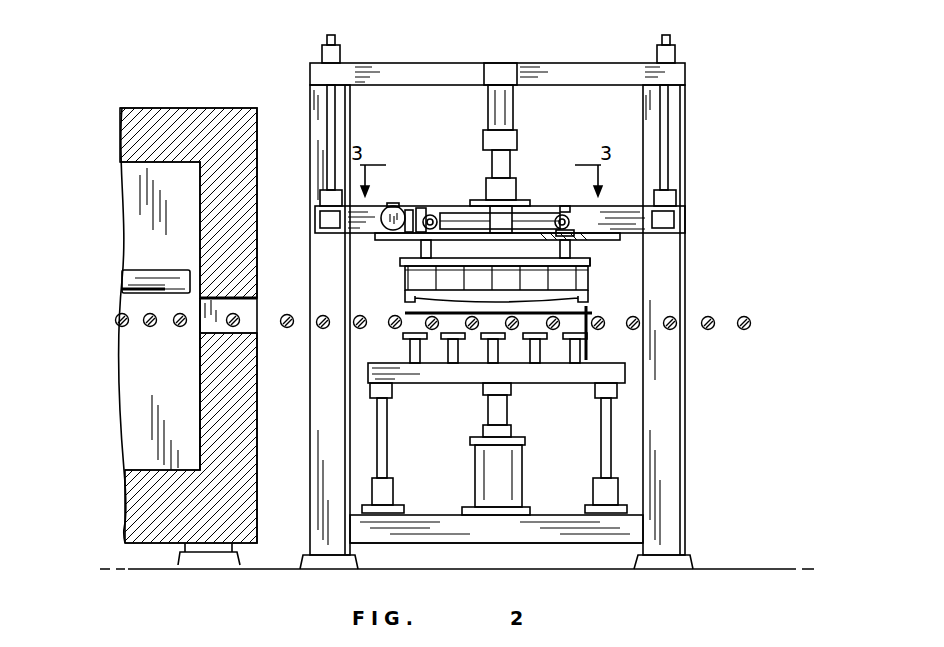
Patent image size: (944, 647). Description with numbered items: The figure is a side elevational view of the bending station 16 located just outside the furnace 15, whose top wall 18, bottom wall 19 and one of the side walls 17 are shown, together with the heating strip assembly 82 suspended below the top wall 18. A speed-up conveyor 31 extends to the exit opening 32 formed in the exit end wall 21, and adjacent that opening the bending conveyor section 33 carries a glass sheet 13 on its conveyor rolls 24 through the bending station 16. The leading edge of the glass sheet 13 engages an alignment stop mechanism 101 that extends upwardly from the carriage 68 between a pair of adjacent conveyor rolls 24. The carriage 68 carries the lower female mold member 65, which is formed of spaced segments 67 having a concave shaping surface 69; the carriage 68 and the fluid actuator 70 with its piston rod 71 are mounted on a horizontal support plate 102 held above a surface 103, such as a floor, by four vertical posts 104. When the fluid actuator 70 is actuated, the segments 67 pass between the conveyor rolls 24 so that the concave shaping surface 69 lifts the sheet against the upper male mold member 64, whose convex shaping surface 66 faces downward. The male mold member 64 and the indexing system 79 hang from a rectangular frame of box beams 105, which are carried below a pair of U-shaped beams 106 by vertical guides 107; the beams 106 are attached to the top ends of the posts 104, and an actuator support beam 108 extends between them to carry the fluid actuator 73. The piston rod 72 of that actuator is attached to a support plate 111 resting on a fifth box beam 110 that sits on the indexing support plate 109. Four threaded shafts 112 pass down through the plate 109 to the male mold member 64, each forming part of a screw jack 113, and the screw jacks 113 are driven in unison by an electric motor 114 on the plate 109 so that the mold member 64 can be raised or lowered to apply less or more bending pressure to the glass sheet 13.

The glass sheet 13 is at (490, 305).
The furnace 15 is at (178, 105).
The bending station 16 is at (712, 36).
The side walls 17 is at (130, 186).
The top wall 18 is at (137, 108).
The bottom wall 19 is at (132, 505).
The exit end wall 21 is at (250, 415).
The conveyor rolls 24 is at (147, 322).
The speed-up conveyor 31 is at (178, 338).
The exit opening 32 is at (246, 300).
The bending conveyor section 33 is at (700, 300).
The upper male mold member 64 is at (595, 264).
The lower female mold member 65 is at (424, 388).
The convex shaping surface 66 is at (410, 298).
The segments 67 is at (576, 375).
The carriage 68 is at (372, 366).
The concave shaping surface 69 is at (468, 378).
The fluid actuator 70 is at (515, 465).
The piston rod 71 is at (497, 428).
The piston rod 72 is at (505, 160).
The fluid actuator 73 is at (512, 112).
The indexing system 79 is at (424, 200).
The heating strip assembly 82 is at (126, 268).
The alignment stop mechanism 101 is at (587, 315).
The support plate 102 is at (444, 515).
The surface 103 is at (468, 569).
The posts 104 is at (347, 360).
The box beams 105 is at (320, 221).
The U-shaped beams 106 is at (340, 63).
The guides 107 is at (332, 118).
The actuator support beam 108 is at (580, 63).
The indexing support plate 109 is at (378, 240).
The fifth box beam 110 is at (530, 200).
The support plate 111 is at (480, 185).
The threaded shafts 112 is at (437, 208).
The screw jacks 113 is at (447, 215).
The electric motor 114 is at (393, 204).